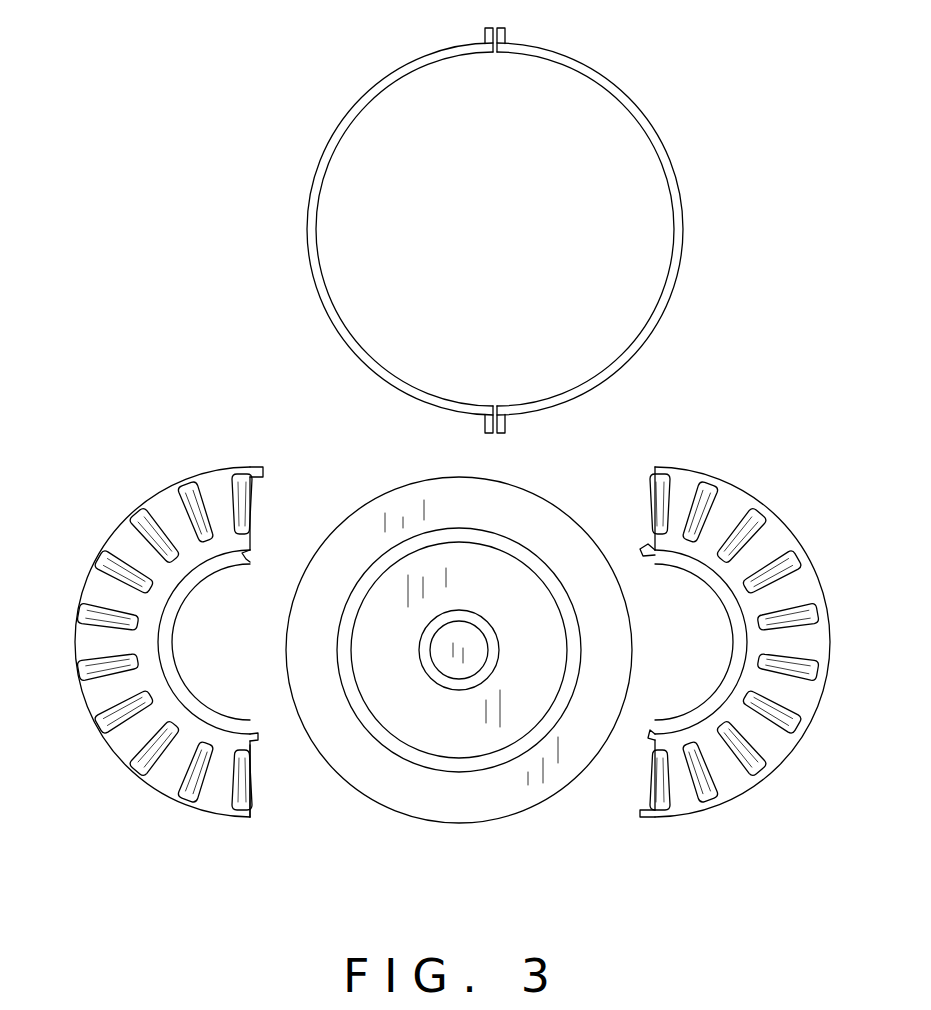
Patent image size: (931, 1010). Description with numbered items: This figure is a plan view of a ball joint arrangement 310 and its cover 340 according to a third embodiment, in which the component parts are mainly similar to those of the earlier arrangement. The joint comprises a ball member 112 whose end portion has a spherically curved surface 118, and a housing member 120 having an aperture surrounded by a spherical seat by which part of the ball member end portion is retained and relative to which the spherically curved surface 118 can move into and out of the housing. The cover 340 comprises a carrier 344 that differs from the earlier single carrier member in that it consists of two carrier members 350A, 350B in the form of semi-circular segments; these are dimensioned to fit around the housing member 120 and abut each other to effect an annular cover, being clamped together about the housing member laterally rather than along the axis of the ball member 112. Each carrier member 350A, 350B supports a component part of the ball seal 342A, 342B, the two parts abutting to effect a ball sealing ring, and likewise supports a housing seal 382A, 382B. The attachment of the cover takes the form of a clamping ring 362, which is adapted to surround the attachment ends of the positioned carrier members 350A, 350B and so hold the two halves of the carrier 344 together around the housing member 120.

The ball joint arrangement 310 is at (257, 372).
The clamping ring 362 is at (311, 259).
The cover 340 is at (197, 448).
The carrier member 350B is at (175, 808).
The carrier member 350A is at (687, 823).
The ball seal component part 342B is at (176, 592).
The ball seal component part 342A is at (731, 675).
The housing seal 382B is at (265, 473).
The housing seal 382A is at (640, 815).
The carrier 344 is at (272, 810).
The housing member 120 is at (430, 835).
The spherically curved surface 118 is at (487, 732).
The ball member 112 is at (440, 602).